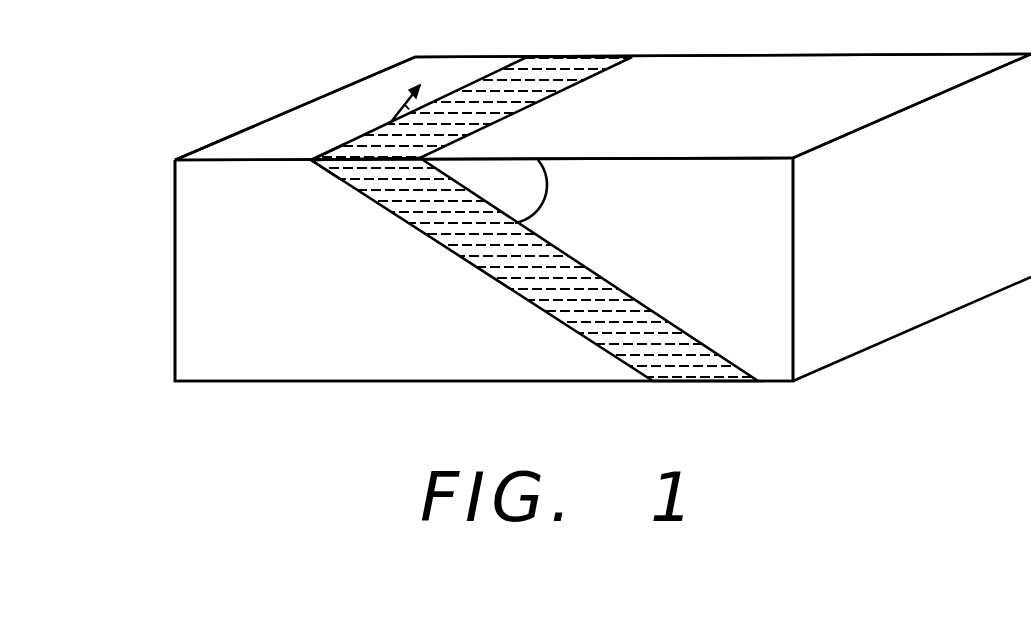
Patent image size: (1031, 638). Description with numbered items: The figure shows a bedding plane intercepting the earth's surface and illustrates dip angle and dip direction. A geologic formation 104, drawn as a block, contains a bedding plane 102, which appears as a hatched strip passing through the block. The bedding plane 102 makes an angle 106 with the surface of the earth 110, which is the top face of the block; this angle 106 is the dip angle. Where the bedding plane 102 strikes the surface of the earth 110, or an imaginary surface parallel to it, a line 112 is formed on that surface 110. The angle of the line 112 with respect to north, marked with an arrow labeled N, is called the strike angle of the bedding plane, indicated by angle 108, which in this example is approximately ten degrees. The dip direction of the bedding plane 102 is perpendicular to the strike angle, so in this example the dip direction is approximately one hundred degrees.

The bedding plane 102 is at (703, 383).
The geologic formation 104 is at (323, 334).
The angle 106 is at (547, 182).
The angle 108 is at (391, 122).
The surface of the earth 110 is at (778, 98).
The line 112 is at (327, 155).